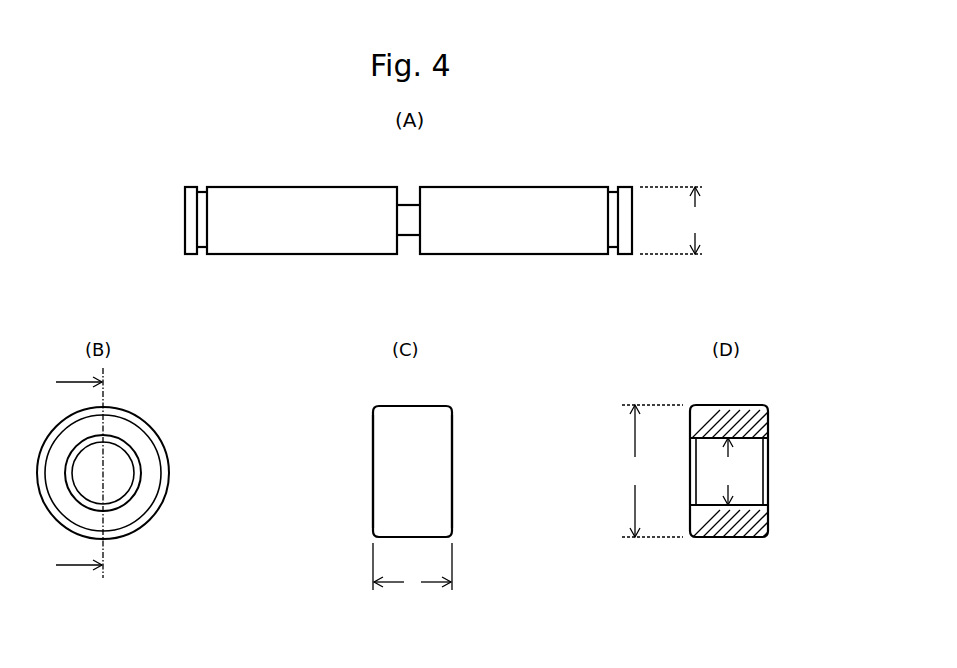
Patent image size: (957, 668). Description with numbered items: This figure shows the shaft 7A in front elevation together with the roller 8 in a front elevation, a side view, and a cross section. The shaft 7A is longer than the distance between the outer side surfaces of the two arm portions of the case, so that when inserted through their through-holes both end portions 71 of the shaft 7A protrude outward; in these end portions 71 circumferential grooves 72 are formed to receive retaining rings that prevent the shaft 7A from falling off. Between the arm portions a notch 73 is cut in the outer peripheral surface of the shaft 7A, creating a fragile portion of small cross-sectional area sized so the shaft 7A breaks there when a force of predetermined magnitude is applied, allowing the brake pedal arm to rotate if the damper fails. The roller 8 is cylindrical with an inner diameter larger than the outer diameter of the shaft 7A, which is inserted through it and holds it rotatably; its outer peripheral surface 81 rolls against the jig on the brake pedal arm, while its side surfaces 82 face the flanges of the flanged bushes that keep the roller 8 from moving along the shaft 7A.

The shaft 7A is at (592, 139).
The end portions 71 is at (208, 260).
The grooves 72 is at (188, 183).
The notch 73 is at (419, 182).
The roller 8 is at (219, 385).
The outer peripheral surface 81 is at (168, 458).
The side surface 82 is at (371, 480).